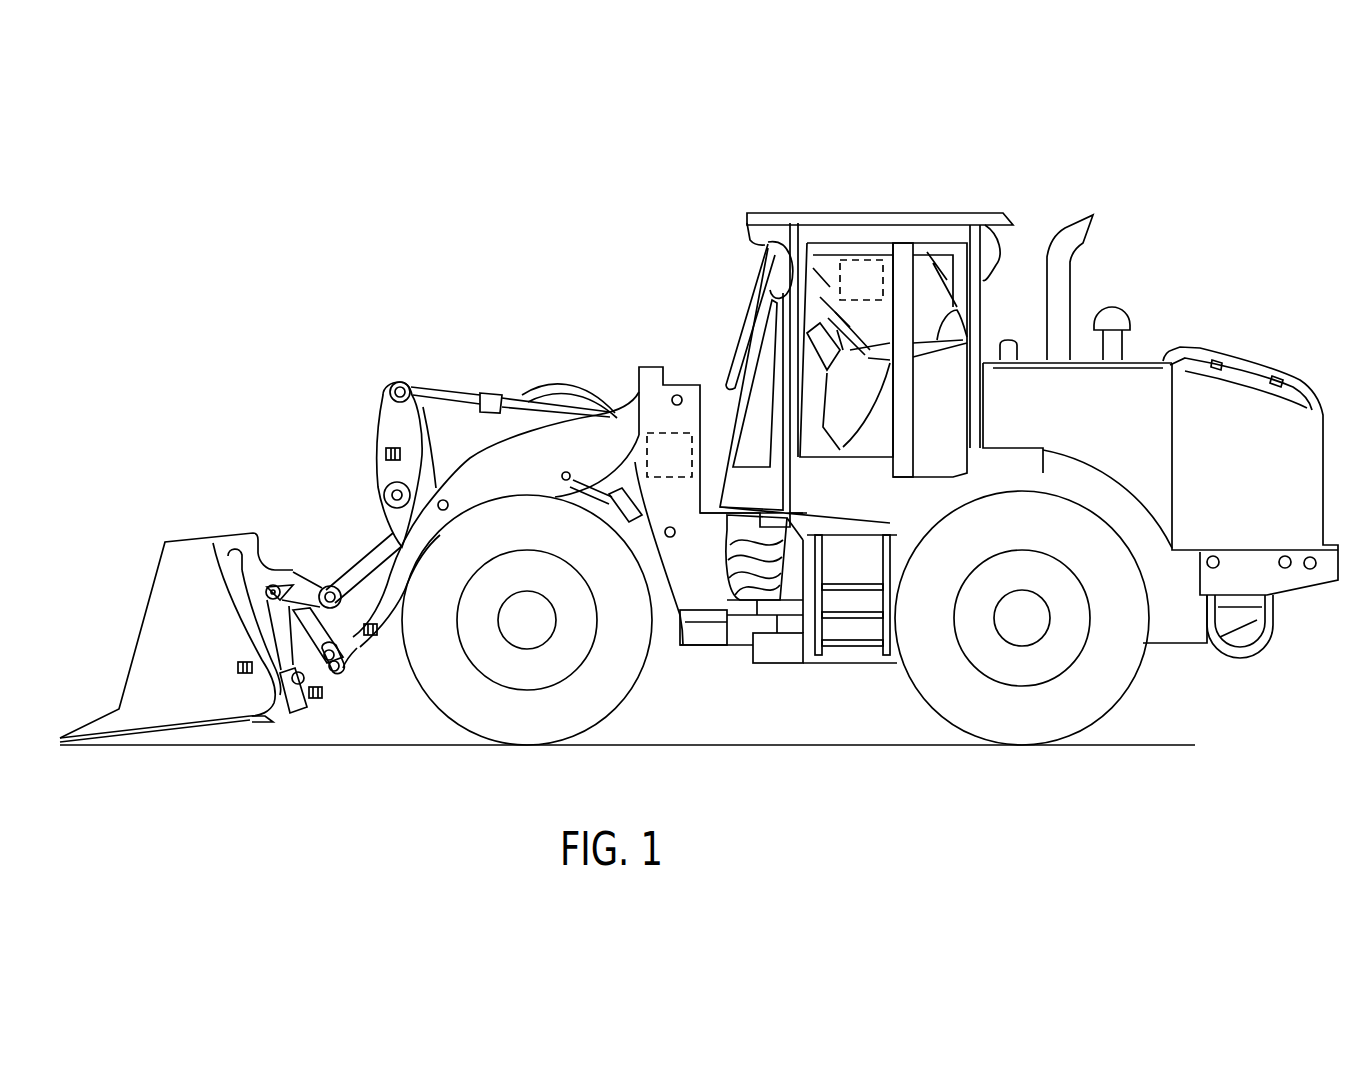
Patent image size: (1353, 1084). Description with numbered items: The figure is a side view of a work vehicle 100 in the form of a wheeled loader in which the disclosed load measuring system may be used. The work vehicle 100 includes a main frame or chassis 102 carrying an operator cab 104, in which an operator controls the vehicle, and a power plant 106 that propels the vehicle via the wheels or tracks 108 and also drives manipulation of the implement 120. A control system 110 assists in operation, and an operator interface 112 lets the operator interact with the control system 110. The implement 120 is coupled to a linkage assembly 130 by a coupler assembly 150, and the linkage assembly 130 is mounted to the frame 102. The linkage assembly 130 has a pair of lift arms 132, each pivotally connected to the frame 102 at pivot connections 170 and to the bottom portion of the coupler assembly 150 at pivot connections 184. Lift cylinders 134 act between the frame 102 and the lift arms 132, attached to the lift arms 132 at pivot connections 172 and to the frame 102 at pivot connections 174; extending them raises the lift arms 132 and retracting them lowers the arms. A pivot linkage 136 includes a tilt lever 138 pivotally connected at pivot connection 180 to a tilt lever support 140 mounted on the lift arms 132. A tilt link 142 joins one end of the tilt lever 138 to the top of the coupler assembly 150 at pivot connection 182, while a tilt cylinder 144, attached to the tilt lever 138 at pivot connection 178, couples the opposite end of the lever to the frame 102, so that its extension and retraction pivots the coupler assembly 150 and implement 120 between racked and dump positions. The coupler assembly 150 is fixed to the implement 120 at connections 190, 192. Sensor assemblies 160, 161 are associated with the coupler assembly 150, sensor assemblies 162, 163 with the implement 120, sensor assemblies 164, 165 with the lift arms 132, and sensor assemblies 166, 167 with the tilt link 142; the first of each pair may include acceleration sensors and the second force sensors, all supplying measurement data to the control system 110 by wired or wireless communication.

The work vehicle 100 is at (495, 172).
The main frame 102 is at (657, 403).
The operator cab 104 is at (753, 313).
The power plant 106 is at (1137, 449).
The wheels 108 is at (1053, 725).
The control system 110 is at (690, 474).
The operator interface 112 is at (882, 294).
The implement 120 is at (178, 533).
The linkage assembly 130 is at (343, 413).
The lift arms 132 is at (397, 563).
The lift cylinders 134 is at (623, 523).
The pivot linkage 136 is at (367, 389).
The tilt lever 138 is at (384, 414).
The tilt lever support 140 is at (450, 470).
The tilt link 142 is at (410, 590).
The tilt cylinder 144 is at (500, 394).
The coupler assembly 150 is at (308, 723).
The sensor assembly 160 is at (320, 720).
The sensor assembly 161 is at (320, 697).
The sensor assembly 162 is at (240, 673).
The sensor assembly 163 is at (247, 662).
The sensor assembly 164 is at (357, 648).
The sensor assembly 165 is at (378, 630).
The sensor assembly 166 is at (386, 452).
The sensor assembly 167 is at (384, 461).
The pivot connections 170 is at (680, 395).
The pivot connections 172 is at (564, 471).
The pivot connections 174 is at (669, 537).
The pivot connection 178 is at (396, 380).
The pivot connection 180 is at (384, 494).
The pivot connection 182 is at (328, 587).
The pivot connections 184 is at (340, 668).
The connection 190 is at (292, 685).
The connection 192 is at (265, 588).